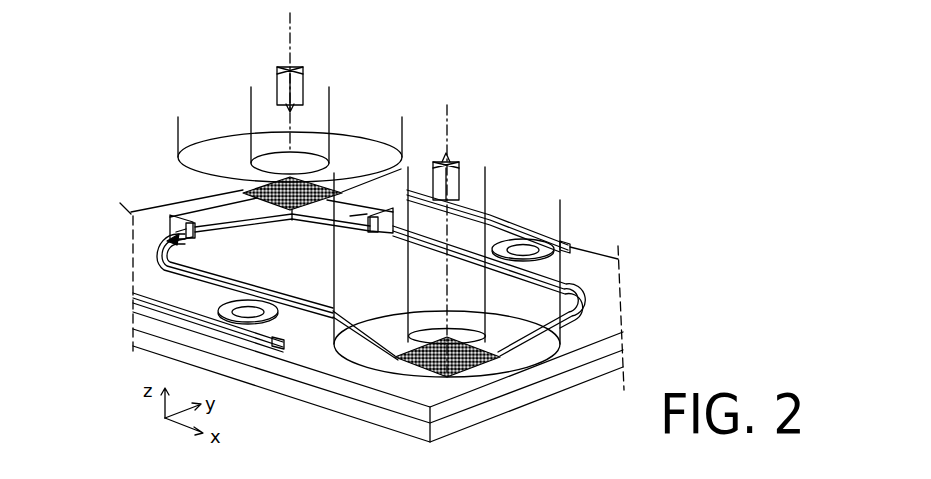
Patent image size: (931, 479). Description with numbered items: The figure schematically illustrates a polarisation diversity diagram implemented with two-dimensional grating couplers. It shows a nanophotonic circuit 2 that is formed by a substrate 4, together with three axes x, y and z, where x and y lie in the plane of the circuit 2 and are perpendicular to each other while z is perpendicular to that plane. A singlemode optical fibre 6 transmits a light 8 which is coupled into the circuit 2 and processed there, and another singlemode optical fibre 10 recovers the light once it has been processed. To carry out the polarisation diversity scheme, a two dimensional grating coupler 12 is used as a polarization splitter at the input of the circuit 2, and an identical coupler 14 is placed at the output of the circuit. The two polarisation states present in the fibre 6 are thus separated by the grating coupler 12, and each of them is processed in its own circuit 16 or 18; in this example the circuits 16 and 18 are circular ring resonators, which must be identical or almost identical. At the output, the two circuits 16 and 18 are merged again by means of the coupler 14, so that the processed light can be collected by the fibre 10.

The nanophotonic circuit 2 is at (518, 210).
The substrate 4 is at (557, 383).
The singlemode optical fibre 6 is at (178, 130).
The light 8 is at (290, 68).
The singlemode optical fibre 10 is at (561, 222).
The two dimensional grating coupler 12 is at (297, 215).
The coupler 14 is at (403, 355).
The circuit 16 is at (267, 320).
The circuit 18 is at (572, 248).